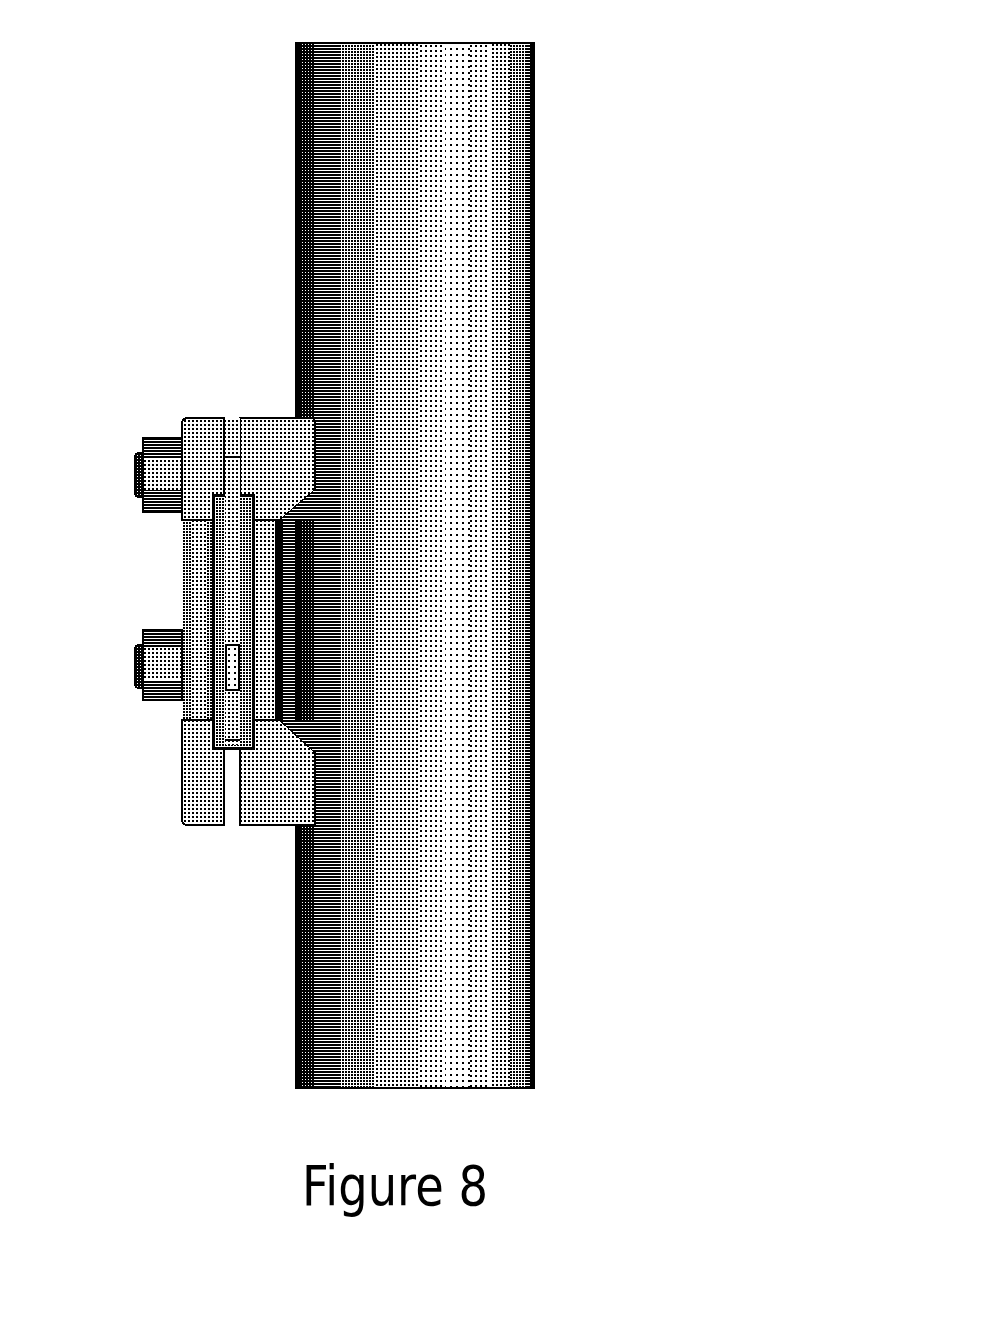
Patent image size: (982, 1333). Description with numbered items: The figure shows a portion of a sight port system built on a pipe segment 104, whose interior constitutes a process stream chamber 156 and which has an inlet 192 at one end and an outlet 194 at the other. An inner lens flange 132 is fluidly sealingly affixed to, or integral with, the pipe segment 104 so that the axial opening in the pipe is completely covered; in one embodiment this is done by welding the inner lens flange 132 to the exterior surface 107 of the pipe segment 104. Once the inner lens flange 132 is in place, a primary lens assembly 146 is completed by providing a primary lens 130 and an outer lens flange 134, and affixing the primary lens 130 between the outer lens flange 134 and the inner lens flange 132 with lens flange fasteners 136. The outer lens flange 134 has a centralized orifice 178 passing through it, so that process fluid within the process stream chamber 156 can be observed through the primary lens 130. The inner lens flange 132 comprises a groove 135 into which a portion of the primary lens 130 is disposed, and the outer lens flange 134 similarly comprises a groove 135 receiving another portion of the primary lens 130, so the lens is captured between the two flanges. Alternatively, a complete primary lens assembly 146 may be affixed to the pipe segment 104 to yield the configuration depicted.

The pipe segment 104 is at (513, 890).
The exterior surface 107 is at (328, 124).
The process stream chamber 156 is at (438, 301).
The inlet 192 is at (395, 45).
The outlet 194 is at (483, 1088).
The primary lens assembly 146 is at (127, 398).
The outer lens flange 134 is at (193, 803).
The inner lens flange 132 is at (277, 815).
The primary lens 130 is at (235, 748).
The groove 135 is at (243, 500).
The lens flange fasteners 136 is at (147, 512).
The centralized orifice 178 is at (190, 708).